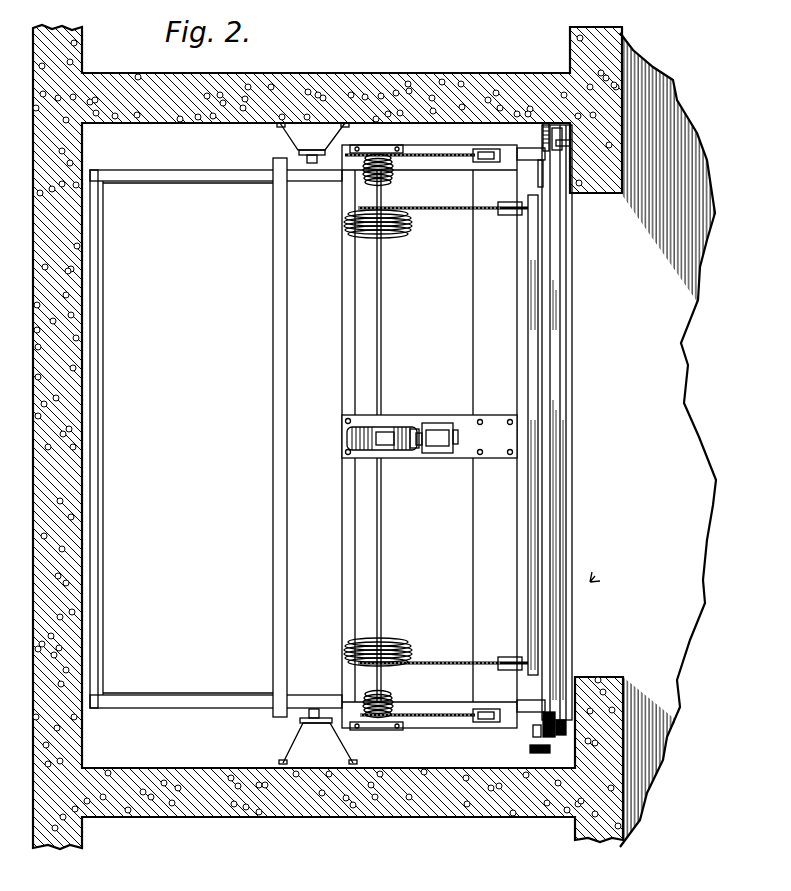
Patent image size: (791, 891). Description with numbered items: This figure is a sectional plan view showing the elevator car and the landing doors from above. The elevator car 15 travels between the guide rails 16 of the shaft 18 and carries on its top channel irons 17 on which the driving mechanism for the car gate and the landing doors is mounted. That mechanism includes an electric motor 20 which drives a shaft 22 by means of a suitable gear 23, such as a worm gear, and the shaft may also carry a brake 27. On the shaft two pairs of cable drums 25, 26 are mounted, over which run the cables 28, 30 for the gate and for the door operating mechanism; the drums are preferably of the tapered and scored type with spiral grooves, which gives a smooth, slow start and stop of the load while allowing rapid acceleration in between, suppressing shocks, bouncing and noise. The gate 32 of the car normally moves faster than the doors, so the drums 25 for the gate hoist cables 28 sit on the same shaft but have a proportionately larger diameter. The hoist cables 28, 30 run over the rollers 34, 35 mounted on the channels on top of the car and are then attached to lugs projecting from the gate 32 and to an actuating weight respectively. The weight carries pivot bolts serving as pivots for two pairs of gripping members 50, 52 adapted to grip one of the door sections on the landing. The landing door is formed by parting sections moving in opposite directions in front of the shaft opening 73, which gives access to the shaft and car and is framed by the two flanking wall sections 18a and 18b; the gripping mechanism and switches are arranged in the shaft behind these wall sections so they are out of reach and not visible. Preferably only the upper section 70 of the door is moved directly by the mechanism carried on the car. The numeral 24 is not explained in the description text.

The elevator car 15 is at (182, 688).
The guide rails 16 is at (297, 726).
The channel irons 17 is at (343, 612).
The shaft 18 is at (183, 125).
The flanking wall section 18a is at (590, 193).
The flanking wall section 18b is at (602, 677).
The electric motor 20 is at (437, 455).
The shaft 22 is at (383, 570).
The gear 23 is at (398, 424).
The coupling 24 is at (414, 452).
The cable drums 25 is at (397, 237).
The cable drums 26 is at (392, 178).
The brake 27 is at (413, 428).
The gate hoist cables 28 is at (438, 211).
The cable 30 is at (437, 153).
The gate 32 is at (533, 490).
The rollers 34 is at (505, 218).
The roller 35 is at (488, 163).
The gripping members 50 is at (521, 158).
The gripping members 52 is at (530, 172).
The upper door section 70 is at (565, 335).
The shaft opening 73 is at (592, 580).